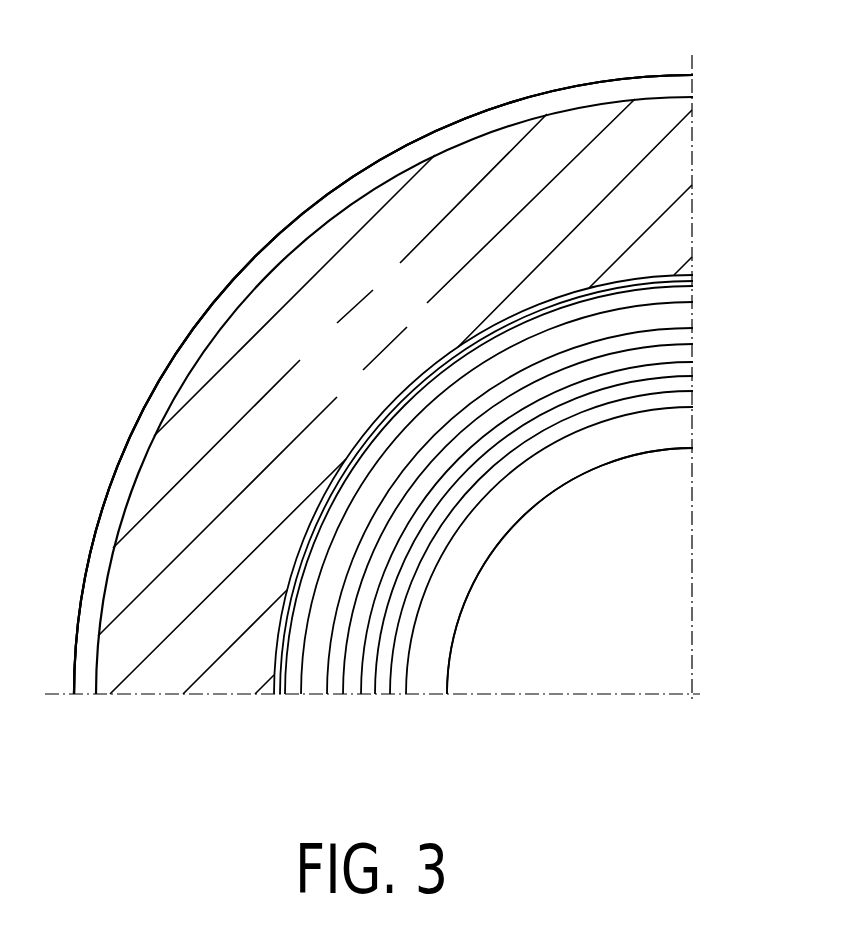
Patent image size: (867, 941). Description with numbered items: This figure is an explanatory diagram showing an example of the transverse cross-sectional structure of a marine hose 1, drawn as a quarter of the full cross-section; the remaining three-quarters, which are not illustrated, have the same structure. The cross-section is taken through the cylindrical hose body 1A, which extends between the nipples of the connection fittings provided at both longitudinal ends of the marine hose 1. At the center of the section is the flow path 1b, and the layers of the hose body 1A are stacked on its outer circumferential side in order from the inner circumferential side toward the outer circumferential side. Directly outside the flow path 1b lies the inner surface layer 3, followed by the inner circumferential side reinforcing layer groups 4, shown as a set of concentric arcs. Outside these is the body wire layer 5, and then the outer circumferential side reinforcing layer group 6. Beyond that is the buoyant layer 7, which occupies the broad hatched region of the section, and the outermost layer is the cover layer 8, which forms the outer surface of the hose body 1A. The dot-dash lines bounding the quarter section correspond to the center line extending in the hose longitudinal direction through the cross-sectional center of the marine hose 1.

The marine hose 1 is at (288, 195).
The hose body 1A is at (210, 313).
The flow path 1b is at (447, 675).
The inner surface layer 3 is at (560, 482).
The inner circumferential side reinforcing layer groups 4 is at (462, 515).
The body wire layer 5 is at (388, 415).
The outer circumferential side reinforcing layer group 6 is at (447, 352).
The buoyant layer 7 is at (412, 200).
The cover layer 8 is at (527, 108).